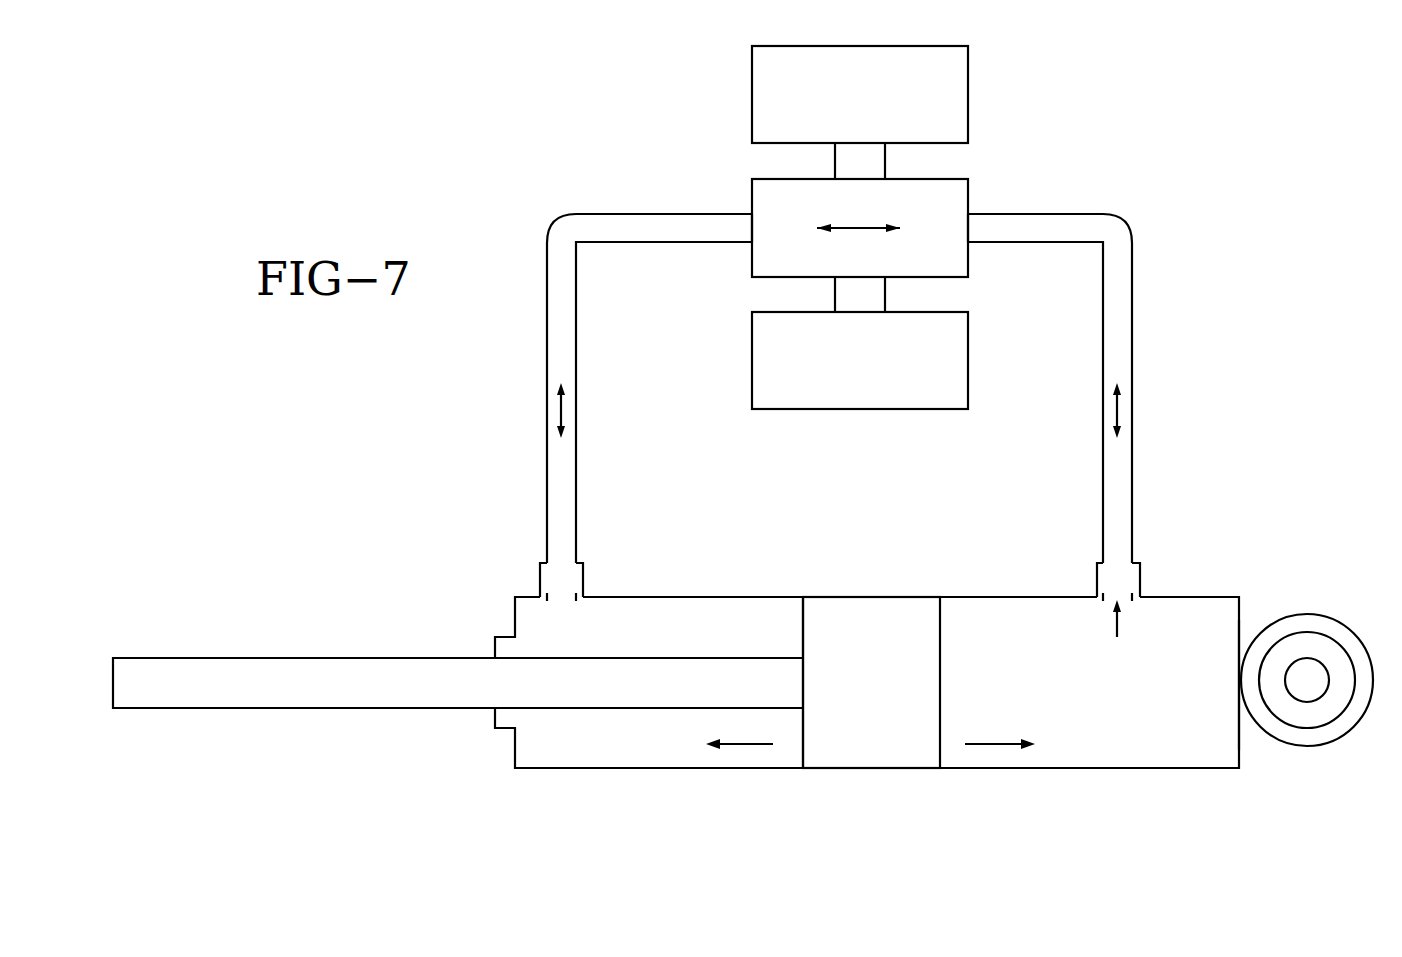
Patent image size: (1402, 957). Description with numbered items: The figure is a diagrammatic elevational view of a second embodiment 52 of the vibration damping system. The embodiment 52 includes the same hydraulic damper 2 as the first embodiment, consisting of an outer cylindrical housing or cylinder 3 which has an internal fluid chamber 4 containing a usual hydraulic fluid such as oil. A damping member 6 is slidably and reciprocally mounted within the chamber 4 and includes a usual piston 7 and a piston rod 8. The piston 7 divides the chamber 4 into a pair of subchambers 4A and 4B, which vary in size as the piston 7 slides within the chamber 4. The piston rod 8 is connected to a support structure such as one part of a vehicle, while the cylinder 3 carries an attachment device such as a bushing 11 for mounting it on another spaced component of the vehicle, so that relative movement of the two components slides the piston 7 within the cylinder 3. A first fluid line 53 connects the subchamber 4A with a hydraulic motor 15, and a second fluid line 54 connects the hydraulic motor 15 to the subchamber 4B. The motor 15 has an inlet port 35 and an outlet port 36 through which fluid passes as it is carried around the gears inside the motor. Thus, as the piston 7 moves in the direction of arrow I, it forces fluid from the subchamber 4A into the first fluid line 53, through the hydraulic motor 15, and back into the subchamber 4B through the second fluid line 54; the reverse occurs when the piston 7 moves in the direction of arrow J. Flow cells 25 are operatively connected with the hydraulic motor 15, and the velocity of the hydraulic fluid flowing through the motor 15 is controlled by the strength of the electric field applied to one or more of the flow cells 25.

The hydraulic damper 2 is at (558, 775).
The cylinder 3 is at (1110, 768).
The fluid chamber 4 is at (1080, 742).
The subchamber 4A is at (1178, 740).
The subchamber 4B is at (638, 740).
The damping member 6 is at (828, 768).
The piston 7 is at (863, 755).
The piston rod 8 is at (285, 697).
The bushing 11 is at (1302, 740).
The hydraulic motor 15 is at (975, 186).
The flow cell 25 is at (975, 72).
The inlet port 35 is at (752, 232).
The outlet port 36 is at (968, 232).
The embodiment 52 is at (1197, 206).
The first fluid line 53 is at (1125, 482).
The second fluid line 54 is at (562, 320).